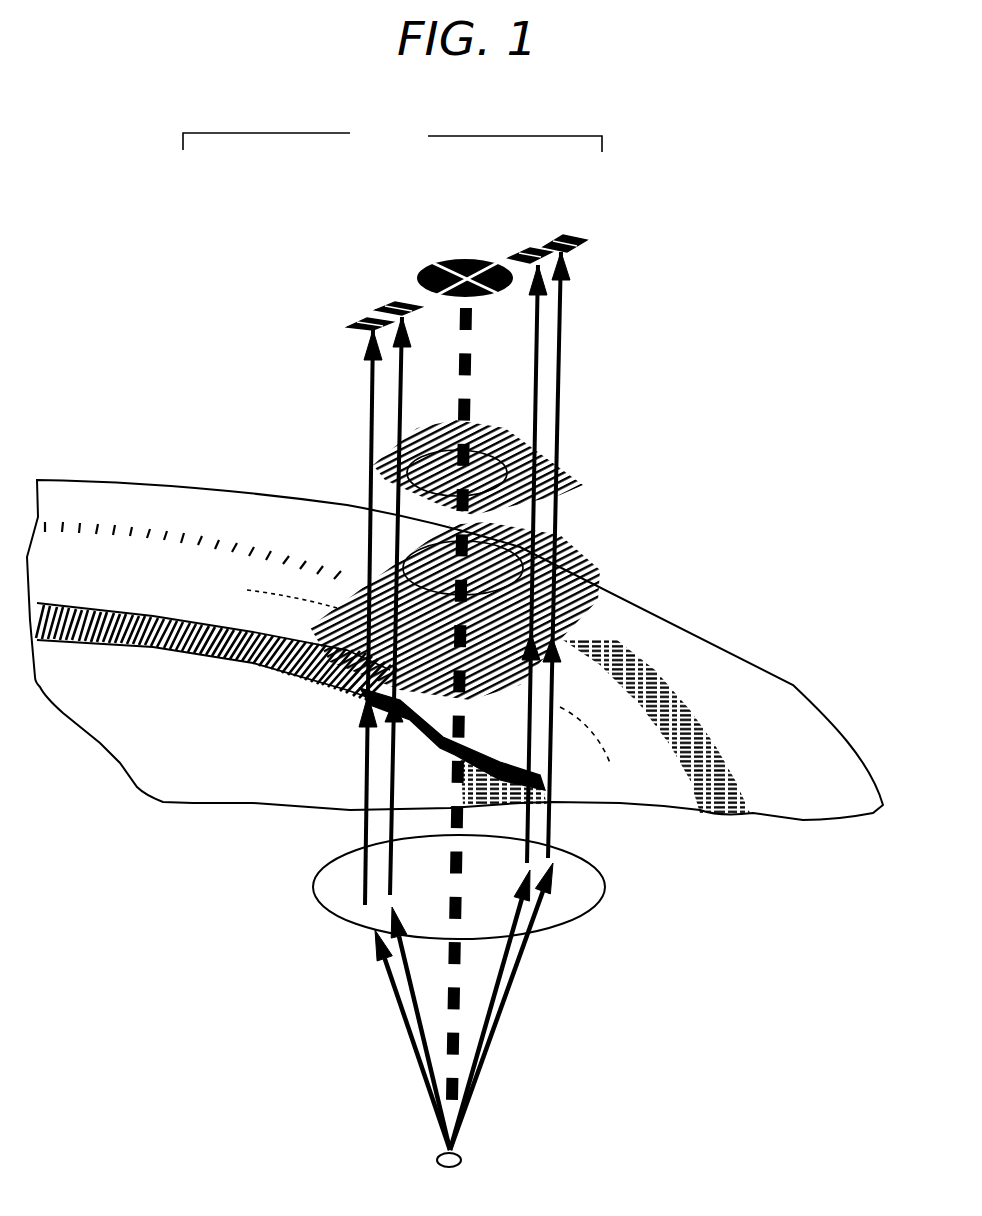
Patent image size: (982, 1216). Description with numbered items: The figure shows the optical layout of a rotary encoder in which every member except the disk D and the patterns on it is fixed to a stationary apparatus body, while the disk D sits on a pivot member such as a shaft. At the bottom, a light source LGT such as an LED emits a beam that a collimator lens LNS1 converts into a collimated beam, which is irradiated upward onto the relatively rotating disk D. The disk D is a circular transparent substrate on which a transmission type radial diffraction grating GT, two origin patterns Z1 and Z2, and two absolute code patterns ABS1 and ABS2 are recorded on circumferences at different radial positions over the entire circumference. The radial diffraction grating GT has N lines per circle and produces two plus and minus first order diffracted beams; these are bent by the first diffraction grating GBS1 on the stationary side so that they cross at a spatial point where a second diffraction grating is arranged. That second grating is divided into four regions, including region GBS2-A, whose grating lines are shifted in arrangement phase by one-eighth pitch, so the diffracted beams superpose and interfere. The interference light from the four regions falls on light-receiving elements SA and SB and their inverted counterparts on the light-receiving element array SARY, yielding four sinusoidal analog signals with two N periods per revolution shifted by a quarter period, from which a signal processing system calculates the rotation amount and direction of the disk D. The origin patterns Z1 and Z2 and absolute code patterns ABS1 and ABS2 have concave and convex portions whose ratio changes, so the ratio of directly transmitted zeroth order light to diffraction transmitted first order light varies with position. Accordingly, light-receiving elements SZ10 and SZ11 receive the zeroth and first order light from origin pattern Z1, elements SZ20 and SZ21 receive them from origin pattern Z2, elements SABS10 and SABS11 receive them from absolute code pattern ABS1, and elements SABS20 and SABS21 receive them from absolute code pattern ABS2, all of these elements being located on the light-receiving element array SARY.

The light-receiving element array SARY is at (392, 142).
The light-receiving element SZ10 is at (322, 254).
The light-receiving element SZ11 is at (392, 303).
The light-receiving element SZ20 is at (302, 290).
The light-receiving element SZ21 is at (358, 317).
The light-receiving element SB is at (506, 268).
The light-receiving element SA is at (506, 268).
The light-receiving element SABS20 is at (500, 212).
The light-receiving element SABS21 is at (522, 247).
The light-receiving element SABS10 is at (590, 205).
The light-receiving element SABS11 is at (570, 238).
The region of second diffraction grating GBS2-A is at (566, 421).
The first diffraction grating GBS1 is at (520, 573).
The origin pattern Z1 is at (560, 627).
The origin pattern Z2 is at (563, 647).
The disk D is at (787, 687).
The absolute code pattern ABS2 is at (290, 597).
The absolute code pattern ABS1 is at (220, 617).
The radial diffraction grating GT is at (415, 645).
The collimator lens LNS1 is at (593, 895).
The light source LGT is at (464, 1018).